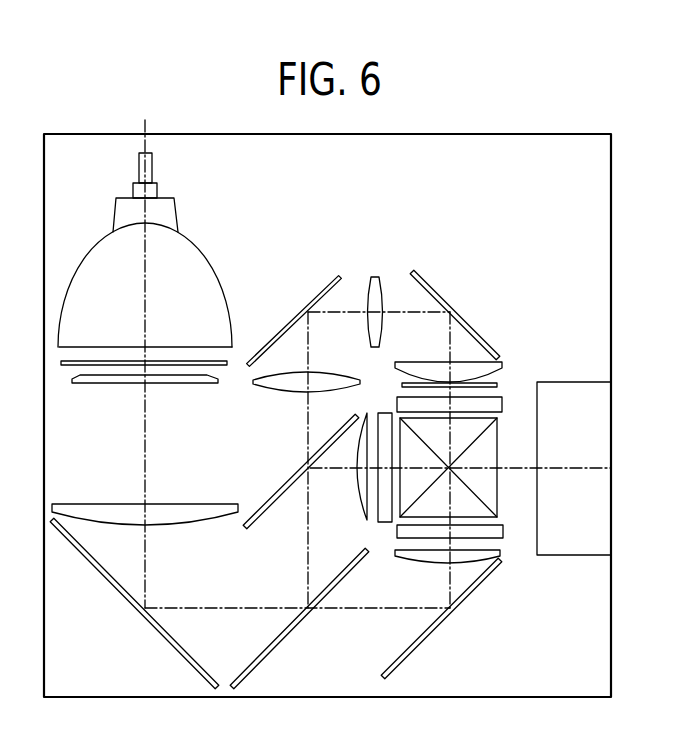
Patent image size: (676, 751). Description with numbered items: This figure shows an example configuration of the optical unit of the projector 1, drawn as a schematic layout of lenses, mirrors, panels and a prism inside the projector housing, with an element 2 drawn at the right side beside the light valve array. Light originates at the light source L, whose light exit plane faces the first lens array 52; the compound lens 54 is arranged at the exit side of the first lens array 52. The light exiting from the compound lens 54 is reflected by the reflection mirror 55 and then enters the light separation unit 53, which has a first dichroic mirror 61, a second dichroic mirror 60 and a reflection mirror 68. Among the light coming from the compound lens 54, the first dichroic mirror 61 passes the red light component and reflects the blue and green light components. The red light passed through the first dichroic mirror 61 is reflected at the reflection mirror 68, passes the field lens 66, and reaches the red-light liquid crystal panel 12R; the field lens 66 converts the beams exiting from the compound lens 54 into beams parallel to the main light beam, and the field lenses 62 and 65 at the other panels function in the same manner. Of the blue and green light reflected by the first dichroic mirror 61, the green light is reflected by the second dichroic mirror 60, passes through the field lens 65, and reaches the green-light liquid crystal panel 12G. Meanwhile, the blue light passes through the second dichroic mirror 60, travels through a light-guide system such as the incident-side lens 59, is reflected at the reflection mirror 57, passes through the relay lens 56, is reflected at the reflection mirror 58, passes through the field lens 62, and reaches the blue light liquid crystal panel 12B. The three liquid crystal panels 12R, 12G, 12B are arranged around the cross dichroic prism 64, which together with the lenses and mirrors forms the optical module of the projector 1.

The projector 1 is at (566, 134).
The projection lens unit 2 is at (566, 382).
The light source L is at (91, 234).
The first lens array 52 is at (97, 385).
The light separation unit 53 is at (347, 666).
The compound lens 54 is at (85, 503).
The reflection mirror 55 is at (93, 568).
The relay lens 56 is at (375, 277).
The reflection mirror 57 is at (317, 293).
The reflection mirror 58 is at (433, 290).
The incident-side lens 59 is at (283, 390).
The second dichroic mirror 60 is at (267, 505).
The first dichroic mirror 61 is at (290, 630).
The field lens 62 is at (420, 362).
The cross dichroic prism 64 is at (497, 445).
The field lens 65 is at (360, 505).
The field lens 66 is at (500, 552).
The reflection mirror 68 is at (437, 628).
The blue light liquid crystal panel 12B is at (502, 403).
The green-light liquid crystal panel 12G is at (386, 523).
The red-light liquid crystal panel 12R is at (503, 531).